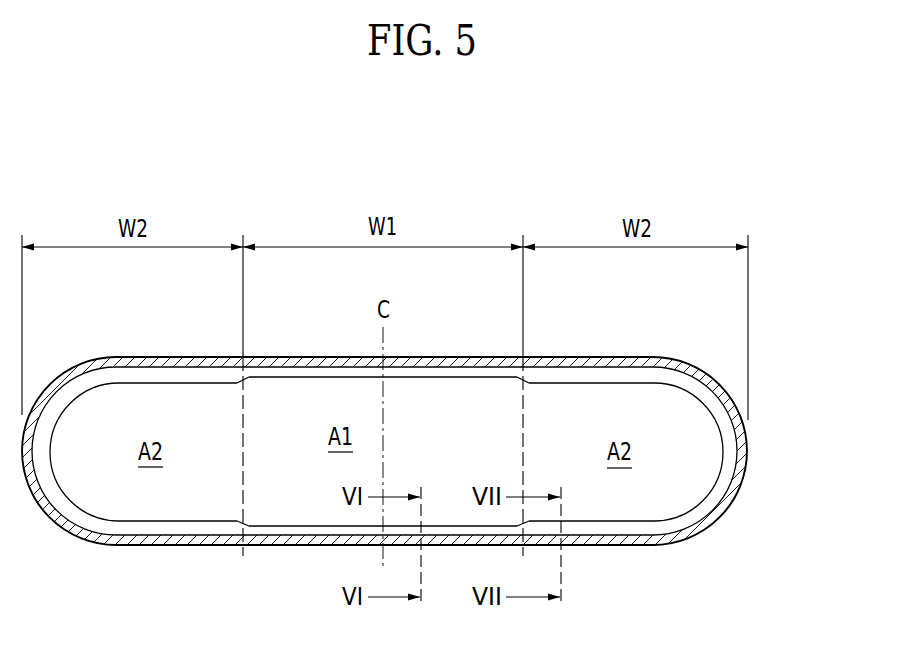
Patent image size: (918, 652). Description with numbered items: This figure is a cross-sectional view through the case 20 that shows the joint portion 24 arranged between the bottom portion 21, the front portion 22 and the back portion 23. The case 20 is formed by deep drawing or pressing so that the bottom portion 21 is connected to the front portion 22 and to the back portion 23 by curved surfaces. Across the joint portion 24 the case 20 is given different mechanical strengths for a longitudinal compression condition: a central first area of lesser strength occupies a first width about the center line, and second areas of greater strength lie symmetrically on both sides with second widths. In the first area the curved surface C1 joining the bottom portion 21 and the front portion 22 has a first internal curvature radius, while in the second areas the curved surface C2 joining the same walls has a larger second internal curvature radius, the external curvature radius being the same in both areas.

The case 20 is at (768, 470).
The first surface/wall (bottom portion) 21 is at (132, 497).
The second surface/wall (front portion) 22 is at (605, 540).
The third surface/wall (back portion) 23 is at (614, 362).
The joint portion 24 is at (698, 514).
The curved surface C1 is at (263, 527).
The curved surface C2 is at (632, 520).